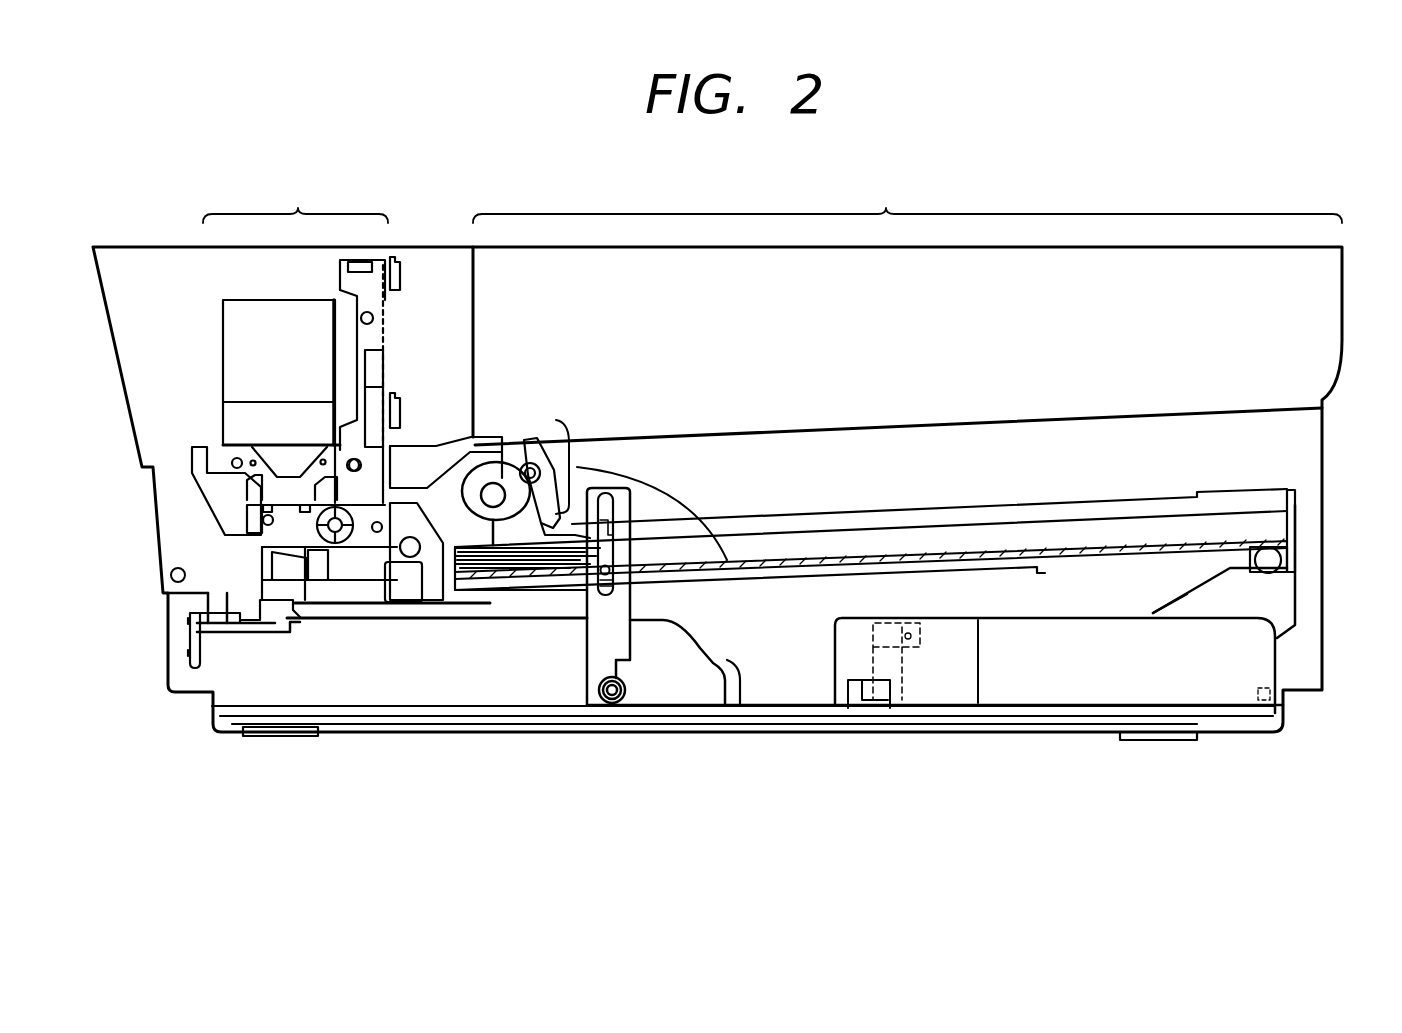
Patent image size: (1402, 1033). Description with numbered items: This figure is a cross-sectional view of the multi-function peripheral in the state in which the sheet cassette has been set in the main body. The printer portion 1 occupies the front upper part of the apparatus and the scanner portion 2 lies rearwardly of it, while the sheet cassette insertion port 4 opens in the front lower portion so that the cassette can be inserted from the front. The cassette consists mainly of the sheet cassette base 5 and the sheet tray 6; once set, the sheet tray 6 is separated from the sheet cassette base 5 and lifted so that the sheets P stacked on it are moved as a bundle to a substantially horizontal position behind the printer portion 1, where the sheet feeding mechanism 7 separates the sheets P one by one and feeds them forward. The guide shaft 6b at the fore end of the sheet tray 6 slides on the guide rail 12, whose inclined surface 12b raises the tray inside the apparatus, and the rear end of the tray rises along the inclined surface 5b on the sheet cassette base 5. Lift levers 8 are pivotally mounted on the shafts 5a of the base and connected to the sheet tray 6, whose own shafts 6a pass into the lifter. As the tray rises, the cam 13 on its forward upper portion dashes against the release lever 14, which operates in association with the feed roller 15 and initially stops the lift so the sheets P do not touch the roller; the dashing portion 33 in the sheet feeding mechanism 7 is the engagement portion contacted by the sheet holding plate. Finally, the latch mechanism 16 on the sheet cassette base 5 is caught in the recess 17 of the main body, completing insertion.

The printer portion 1 is at (289, 203).
The scanner portion 2 is at (877, 203).
The sheet cassette insertion port 4 is at (202, 678).
The sheet cassette base 5 is at (372, 683).
The shaft 5a is at (611, 703).
The inclined surface 5b is at (736, 668).
The sheet tray 6 is at (1289, 497).
The shaft 6a is at (602, 576).
The guide shaft 6b is at (1272, 561).
The sheet feeding mechanism 7 is at (727, 560).
The lift lever 8 is at (620, 640).
The guide rail 12 is at (1273, 600).
The inclined surface 12b is at (1187, 594).
The cam 13 is at (557, 550).
The release lever 14 is at (541, 536).
The feed roller 15 is at (476, 520).
The latch mechanism 16 is at (268, 615).
The recess 17 is at (310, 613).
The dashing portion 33 is at (433, 505).
The sheets P is at (822, 548).